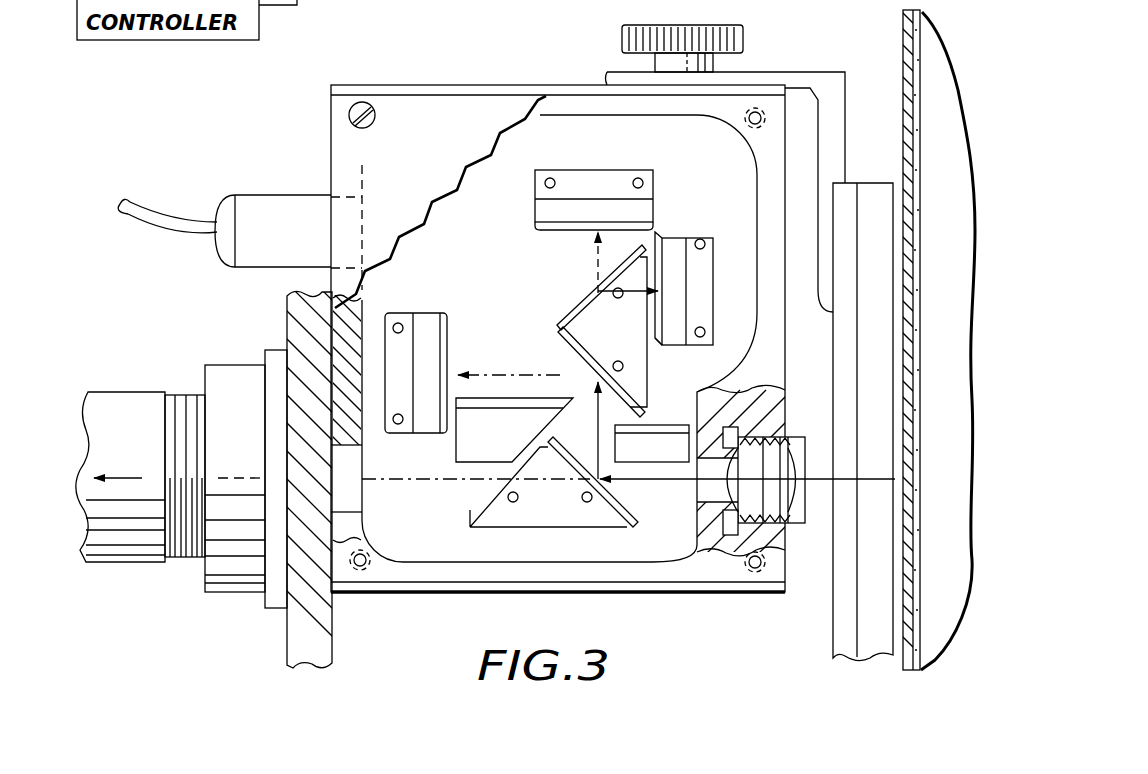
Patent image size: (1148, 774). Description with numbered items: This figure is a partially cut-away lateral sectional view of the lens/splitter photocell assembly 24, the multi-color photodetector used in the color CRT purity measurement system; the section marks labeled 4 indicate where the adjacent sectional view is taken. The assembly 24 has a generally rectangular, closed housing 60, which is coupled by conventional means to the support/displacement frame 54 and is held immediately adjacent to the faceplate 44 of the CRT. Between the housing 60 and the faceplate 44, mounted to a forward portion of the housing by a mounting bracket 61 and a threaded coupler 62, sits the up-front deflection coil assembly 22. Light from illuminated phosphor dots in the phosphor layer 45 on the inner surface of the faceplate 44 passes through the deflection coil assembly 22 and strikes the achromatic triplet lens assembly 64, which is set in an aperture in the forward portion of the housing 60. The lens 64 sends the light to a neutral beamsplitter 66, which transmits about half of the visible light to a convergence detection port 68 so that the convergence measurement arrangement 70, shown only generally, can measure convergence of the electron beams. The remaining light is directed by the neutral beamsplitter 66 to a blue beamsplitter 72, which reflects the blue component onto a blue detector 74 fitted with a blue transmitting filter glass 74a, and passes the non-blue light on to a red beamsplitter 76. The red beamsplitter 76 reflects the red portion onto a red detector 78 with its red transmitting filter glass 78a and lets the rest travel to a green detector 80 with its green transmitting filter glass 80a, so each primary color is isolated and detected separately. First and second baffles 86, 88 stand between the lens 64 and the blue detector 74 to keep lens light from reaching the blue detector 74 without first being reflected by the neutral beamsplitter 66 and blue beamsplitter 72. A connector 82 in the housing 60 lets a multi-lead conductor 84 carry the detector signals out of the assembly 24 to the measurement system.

The section line 4- 4 is at (800, 212).
The up-front deflection coil assembly 22 is at (833, 601).
The lens/splitter photocell assembly 24 is at (322, 87).
The faceplate 44 is at (903, 55).
The phosphor layer 45 is at (942, 0).
The support/displacement frame 54 is at (332, 627).
The housing 60 is at (406, 86).
The mounting bracket 61 is at (801, 72).
The threaded coupler 62 is at (748, 40).
The achromatic triplet lens assembly 64 is at (778, 442).
The neutral beamsplitter 66 is at (618, 505).
The convergence detection port 68 is at (363, 452).
The convergence measurement arrangement 70 is at (140, 392).
The blue beamsplitter 72 is at (563, 343).
The blue detector 74 is at (393, 312).
The blue transmitting filter glass 74a is at (447, 338).
The red beamsplitter 76 is at (585, 300).
The red detector 78 is at (716, 286).
The red transmitting filter glass 78a is at (660, 347).
The green detector 80 is at (530, 210).
The green transmitting filter glass 80a is at (655, 228).
The connector 82 is at (262, 196).
The multi-lead conductor 84 is at (136, 207).
The first baffle 86 is at (668, 459).
The second baffle 88 is at (512, 449).